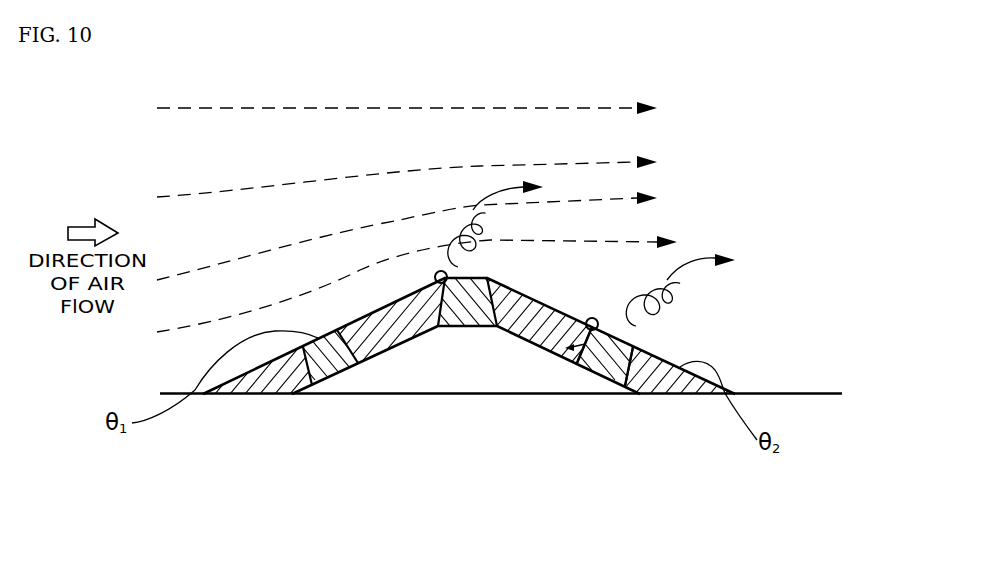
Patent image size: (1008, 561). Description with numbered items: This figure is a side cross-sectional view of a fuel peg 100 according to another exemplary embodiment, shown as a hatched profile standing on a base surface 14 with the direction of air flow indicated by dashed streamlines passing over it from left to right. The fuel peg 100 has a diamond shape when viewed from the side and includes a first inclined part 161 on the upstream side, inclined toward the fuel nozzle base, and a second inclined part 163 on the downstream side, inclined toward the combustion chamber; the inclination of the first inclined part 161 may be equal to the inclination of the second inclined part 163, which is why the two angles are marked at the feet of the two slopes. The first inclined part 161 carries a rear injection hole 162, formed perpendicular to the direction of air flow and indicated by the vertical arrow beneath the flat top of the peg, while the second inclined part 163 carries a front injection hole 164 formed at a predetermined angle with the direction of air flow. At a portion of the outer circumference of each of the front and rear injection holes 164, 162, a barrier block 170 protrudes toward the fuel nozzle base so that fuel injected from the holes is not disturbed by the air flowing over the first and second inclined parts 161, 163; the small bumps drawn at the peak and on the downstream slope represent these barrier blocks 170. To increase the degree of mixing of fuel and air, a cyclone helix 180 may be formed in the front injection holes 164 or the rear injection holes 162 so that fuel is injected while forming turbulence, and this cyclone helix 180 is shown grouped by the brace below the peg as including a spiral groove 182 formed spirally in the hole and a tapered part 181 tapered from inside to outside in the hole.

The panel surface 14 is at (808, 413).
The fuel peg 100 is at (355, 369).
The first inclined part 161 is at (285, 376).
The rear injection hole 162 is at (452, 333).
The second inclined part 163 is at (666, 382).
The front injection hole 164 is at (560, 350).
The barrier block 170 is at (594, 322).
The cyclone helix 180 is at (630, 481).
The tapered part 181 is at (641, 392).
The spiral groove 182 is at (581, 365).